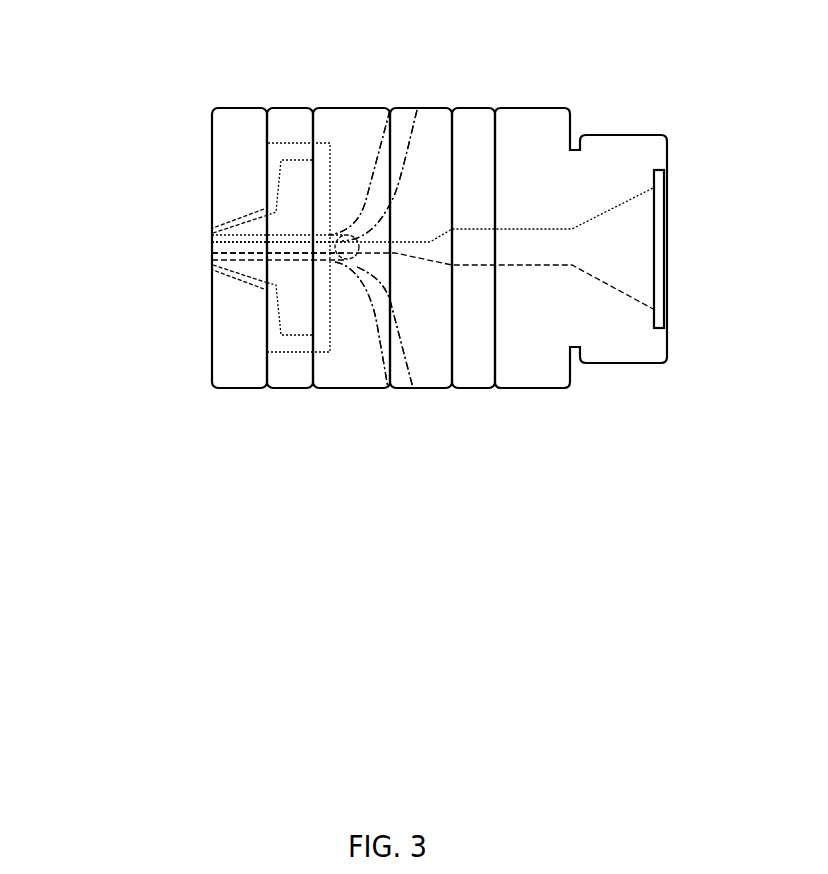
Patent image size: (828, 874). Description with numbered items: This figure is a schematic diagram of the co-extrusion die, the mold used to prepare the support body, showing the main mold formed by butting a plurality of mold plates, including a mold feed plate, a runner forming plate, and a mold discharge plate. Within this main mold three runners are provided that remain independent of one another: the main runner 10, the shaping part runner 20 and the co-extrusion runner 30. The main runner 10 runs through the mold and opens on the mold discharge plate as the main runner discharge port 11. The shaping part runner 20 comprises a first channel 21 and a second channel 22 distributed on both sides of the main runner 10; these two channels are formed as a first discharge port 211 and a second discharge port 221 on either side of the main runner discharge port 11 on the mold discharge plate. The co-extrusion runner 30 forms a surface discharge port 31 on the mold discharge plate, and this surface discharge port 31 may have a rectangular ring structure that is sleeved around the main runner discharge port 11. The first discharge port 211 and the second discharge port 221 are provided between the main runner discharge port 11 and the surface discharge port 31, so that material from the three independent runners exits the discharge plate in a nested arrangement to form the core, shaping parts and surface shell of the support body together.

The main runner 10 is at (510, 262).
The main runner discharge port 11 is at (212, 250).
The shaping part runner 20 is at (370, 207).
The first channel 21 is at (405, 140).
The first discharge port 211 is at (212, 240).
The second channel 22 is at (378, 337).
The second discharge port 221 is at (212, 262).
The co-extrusion runner 30 is at (290, 150).
The surface discharge port 31 is at (212, 232).